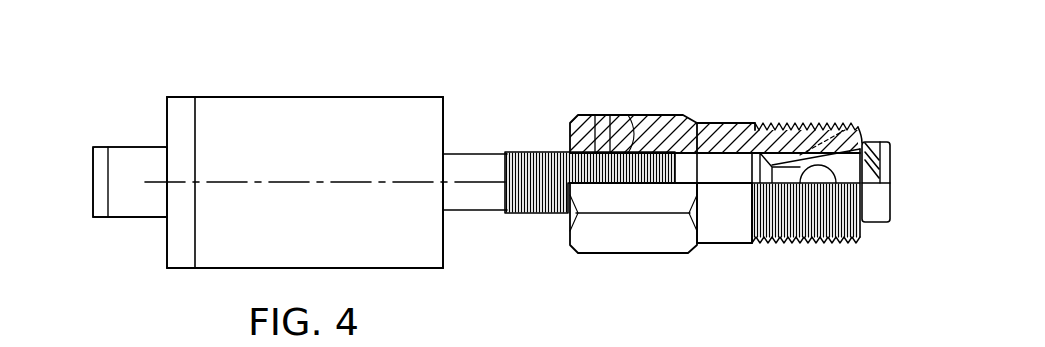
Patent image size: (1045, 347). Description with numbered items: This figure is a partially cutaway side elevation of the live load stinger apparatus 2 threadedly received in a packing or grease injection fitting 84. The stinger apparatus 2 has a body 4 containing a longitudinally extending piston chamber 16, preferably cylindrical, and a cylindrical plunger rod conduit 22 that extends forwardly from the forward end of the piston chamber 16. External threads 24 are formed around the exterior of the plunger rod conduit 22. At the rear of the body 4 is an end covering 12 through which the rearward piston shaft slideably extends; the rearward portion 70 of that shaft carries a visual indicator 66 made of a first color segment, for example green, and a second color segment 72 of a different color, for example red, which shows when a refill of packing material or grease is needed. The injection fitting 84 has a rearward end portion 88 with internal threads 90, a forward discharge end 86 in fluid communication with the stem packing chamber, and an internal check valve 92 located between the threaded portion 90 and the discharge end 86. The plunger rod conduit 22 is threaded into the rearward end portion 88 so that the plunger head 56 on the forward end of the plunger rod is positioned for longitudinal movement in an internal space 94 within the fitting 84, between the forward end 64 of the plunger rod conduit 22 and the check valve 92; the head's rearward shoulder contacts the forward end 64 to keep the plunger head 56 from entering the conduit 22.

The live load stinger apparatus 2 is at (257, 97).
The body 4 is at (224, 268).
The end covering 12 is at (182, 102).
The piston chamber 16 is at (385, 97).
The plunger rod conduit 22 is at (490, 153).
The external threads 24 is at (540, 153).
The plunger head 56 is at (697, 150).
The forward end of the plunger rod conduit 64 is at (697, 188).
The visual indicator 66 is at (130, 147).
The rearward portion of the rearward piston shaft 70 is at (130, 217).
The second color segment 72 is at (100, 163).
The injection fitting 84 is at (852, 138).
The forward discharge end 86 is at (892, 155).
The rearward end portion 88 is at (632, 253).
The internal threads 90 is at (634, 145).
The internal check valve 92 is at (817, 161).
The internal space 94 is at (738, 162).